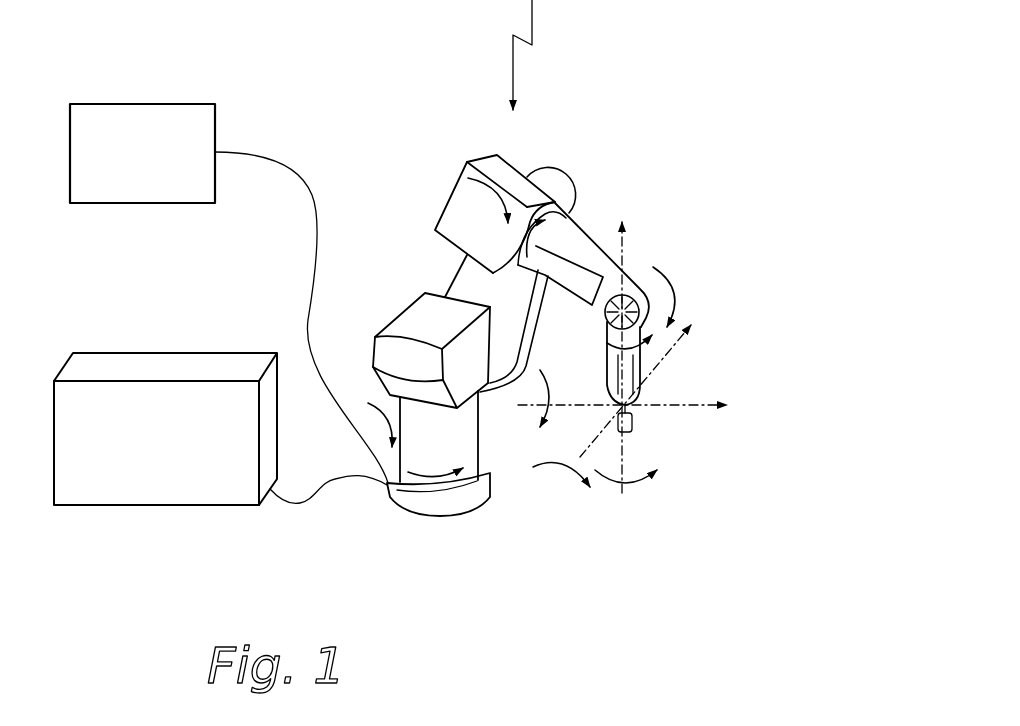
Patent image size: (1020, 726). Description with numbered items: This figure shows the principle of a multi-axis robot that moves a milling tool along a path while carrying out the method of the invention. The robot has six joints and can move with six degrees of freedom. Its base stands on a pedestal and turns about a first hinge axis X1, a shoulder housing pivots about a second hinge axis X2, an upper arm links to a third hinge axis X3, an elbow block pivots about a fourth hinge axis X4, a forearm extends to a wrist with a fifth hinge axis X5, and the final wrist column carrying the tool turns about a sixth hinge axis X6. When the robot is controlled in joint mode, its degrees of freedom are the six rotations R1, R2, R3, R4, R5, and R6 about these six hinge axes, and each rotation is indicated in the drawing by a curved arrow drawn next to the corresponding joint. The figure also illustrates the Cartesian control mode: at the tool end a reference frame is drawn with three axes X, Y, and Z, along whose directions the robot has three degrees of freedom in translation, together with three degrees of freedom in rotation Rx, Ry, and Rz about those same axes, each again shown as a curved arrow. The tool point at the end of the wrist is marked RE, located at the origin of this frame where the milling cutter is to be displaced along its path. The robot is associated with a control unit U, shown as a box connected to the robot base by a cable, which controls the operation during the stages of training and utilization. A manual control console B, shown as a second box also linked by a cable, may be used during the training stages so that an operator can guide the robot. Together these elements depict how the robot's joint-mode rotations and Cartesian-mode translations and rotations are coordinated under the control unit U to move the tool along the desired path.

The manual control console B is at (142, 153).
The control unit U is at (165, 429).
The hinge axis X1 is at (437, 443).
The hinge axis X2 is at (408, 390).
The hinge axis X3 is at (460, 225).
The hinge axis X4 is at (453, 188).
The hinge axis X5 is at (650, 318).
The hinge axis X6 is at (631, 393).
The rotation R1 is at (435, 461).
The rotation R2 is at (371, 409).
The rotation R3 is at (487, 200).
The rotation R4 is at (549, 238).
The rotation R5 is at (674, 296).
The rotation R6 is at (613, 350).
The end effector / tool reference point RE is at (617, 409).
The axis X is at (622, 421).
The axis Y is at (642, 391).
The axis Z is at (635, 353).
The rotation Rx is at (531, 398).
The rotation Ry is at (561, 485).
The rotation Rz is at (626, 492).